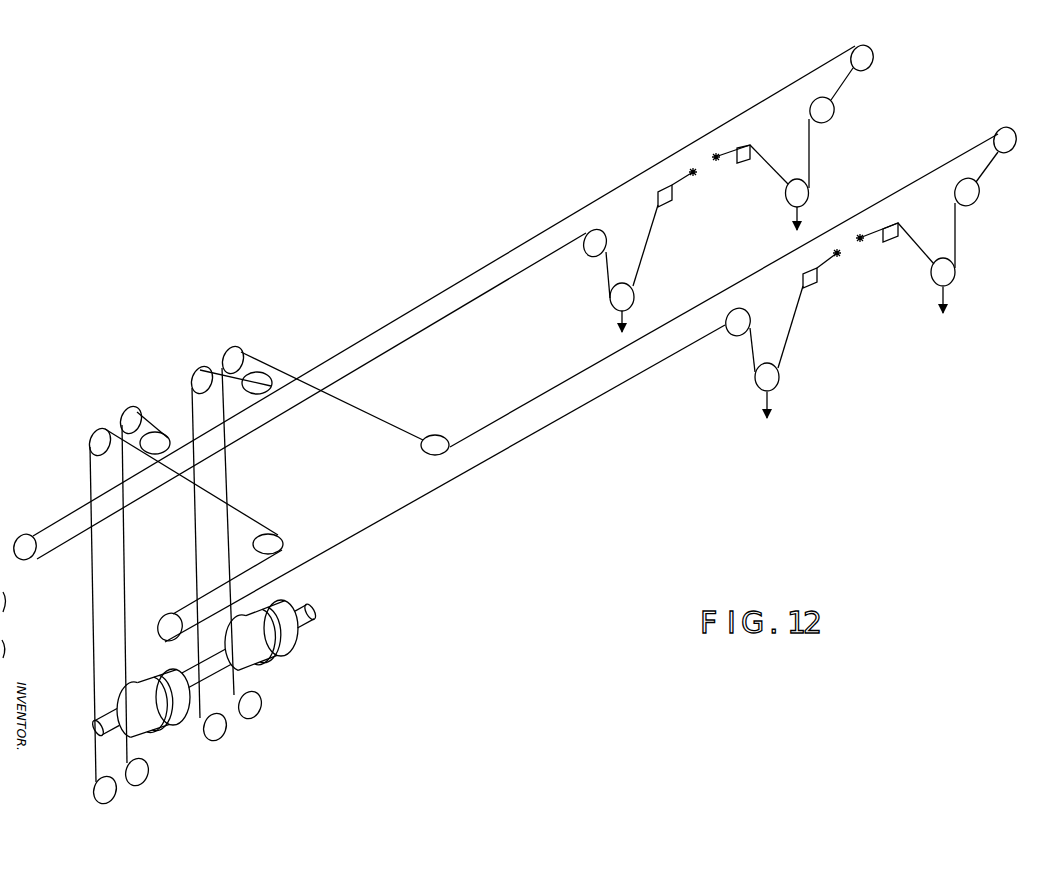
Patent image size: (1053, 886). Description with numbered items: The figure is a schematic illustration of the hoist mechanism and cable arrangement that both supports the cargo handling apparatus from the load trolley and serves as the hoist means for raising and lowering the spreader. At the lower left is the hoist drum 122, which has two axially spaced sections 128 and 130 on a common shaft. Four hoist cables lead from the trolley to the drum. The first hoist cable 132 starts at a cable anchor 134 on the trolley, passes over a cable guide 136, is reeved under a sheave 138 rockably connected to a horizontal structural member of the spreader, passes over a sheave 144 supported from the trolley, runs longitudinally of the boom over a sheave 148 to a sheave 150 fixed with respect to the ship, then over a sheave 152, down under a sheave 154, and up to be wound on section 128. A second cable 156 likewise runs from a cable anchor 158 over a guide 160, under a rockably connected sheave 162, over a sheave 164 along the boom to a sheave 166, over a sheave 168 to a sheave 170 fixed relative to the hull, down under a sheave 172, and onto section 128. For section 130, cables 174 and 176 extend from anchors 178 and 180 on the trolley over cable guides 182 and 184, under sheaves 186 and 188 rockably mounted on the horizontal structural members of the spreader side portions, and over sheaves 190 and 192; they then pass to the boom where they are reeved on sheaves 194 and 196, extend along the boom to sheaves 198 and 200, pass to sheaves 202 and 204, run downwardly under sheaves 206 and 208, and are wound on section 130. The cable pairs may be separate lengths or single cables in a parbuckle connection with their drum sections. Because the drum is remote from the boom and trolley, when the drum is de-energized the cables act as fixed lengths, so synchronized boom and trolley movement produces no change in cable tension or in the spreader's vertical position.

The hoist drum 122 is at (192, 714).
The hoist drum section 128 is at (166, 676).
The hoist drum section 130 is at (283, 604).
The first hoist cable 132 is at (622, 384).
The cable anchor 134 is at (840, 257).
The cable guide 136 is at (806, 290).
The sheave 138 is at (780, 376).
The sheave 144 is at (740, 333).
The sheave 148 is at (167, 614).
The sheave 150 is at (270, 542).
The sheave 152 is at (100, 431).
The sheave 154 is at (96, 791).
The second cable 156 is at (492, 292).
The cable anchor 158 is at (695, 177).
The guide 160 is at (666, 207).
The sheave 162 is at (614, 303).
The sheave 164 is at (590, 251).
The sheave 166 is at (26, 537).
The sheave 168 is at (160, 433).
The sheave 170 is at (130, 409).
The sheave 172 is at (148, 773).
The cable 174 is at (555, 390).
The cable 176 is at (456, 282).
The anchor 178 is at (863, 241).
The anchor 180 is at (717, 161).
The cable guide 182 is at (899, 226).
The cable guide 184 is at (751, 146).
The sheave 186 is at (952, 273).
The sheave 188 is at (806, 191).
The sheave 190 is at (979, 192).
The sheave 192 is at (834, 111).
The sheave 194 is at (1008, 129).
The sheave 196 is at (864, 47).
The sheave 198 is at (437, 436).
The sheave 200 is at (256, 391).
The sheave 202 is at (240, 350).
The sheave 204 is at (201, 370).
The sheave 206 is at (262, 706).
The sheave 208 is at (224, 733).